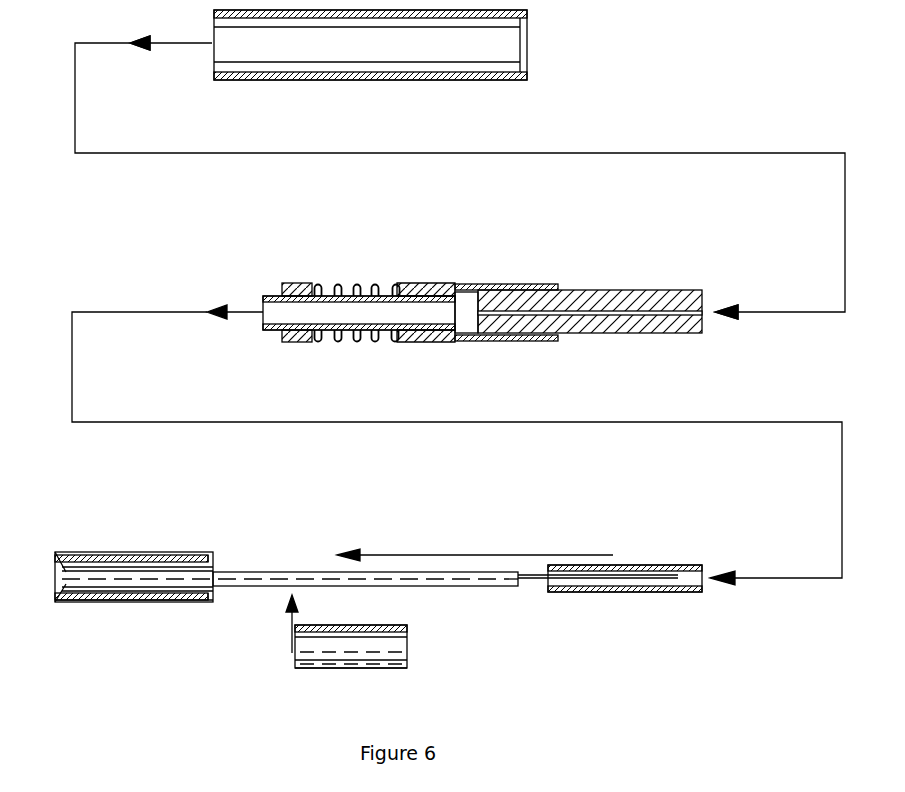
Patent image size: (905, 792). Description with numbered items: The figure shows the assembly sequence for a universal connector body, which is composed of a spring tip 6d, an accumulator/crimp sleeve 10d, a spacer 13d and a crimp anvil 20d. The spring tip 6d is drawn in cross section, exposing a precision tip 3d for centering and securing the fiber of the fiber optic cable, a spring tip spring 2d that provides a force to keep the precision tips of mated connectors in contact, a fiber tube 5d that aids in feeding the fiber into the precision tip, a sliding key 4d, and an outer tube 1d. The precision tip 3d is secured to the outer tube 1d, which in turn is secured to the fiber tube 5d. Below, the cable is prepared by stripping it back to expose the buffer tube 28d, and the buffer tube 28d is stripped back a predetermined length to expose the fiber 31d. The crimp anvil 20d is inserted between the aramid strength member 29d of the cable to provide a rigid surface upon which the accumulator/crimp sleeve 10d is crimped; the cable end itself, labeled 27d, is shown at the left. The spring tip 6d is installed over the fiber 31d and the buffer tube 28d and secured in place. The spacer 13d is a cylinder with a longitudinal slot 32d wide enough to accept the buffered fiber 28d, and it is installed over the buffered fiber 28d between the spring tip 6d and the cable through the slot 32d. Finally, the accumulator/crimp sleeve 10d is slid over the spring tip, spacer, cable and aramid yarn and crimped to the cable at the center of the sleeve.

The accumulator/crimp sleeve 10d is at (370, 62).
The fiber tube 5d is at (265, 298).
The sliding key 4d is at (293, 283).
The spring tip spring 2d is at (380, 287).
The spring tip 6d is at (540, 253).
The outer tube 1d is at (510, 341).
The precision tip 3d is at (647, 336).
The outer sheath 27d is at (98, 547).
The aramid strength member 29d is at (110, 603).
The buffer tube 28d is at (226, 578).
The fiber 31d is at (518, 578).
The crimp anvil 20d is at (650, 622).
The spacer 13d is at (370, 717).
The longitudinal slot 32d is at (407, 637).